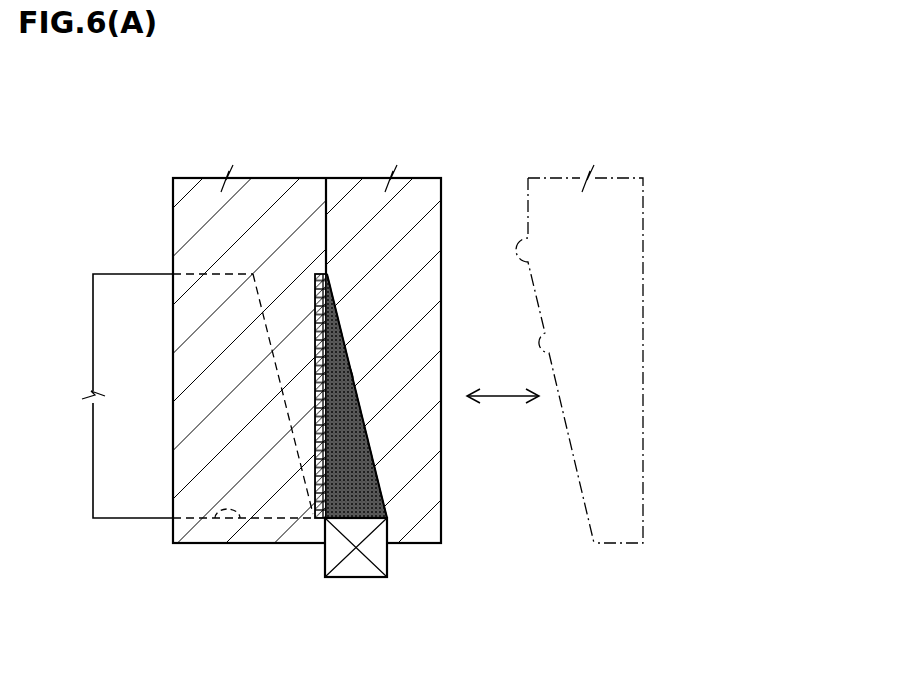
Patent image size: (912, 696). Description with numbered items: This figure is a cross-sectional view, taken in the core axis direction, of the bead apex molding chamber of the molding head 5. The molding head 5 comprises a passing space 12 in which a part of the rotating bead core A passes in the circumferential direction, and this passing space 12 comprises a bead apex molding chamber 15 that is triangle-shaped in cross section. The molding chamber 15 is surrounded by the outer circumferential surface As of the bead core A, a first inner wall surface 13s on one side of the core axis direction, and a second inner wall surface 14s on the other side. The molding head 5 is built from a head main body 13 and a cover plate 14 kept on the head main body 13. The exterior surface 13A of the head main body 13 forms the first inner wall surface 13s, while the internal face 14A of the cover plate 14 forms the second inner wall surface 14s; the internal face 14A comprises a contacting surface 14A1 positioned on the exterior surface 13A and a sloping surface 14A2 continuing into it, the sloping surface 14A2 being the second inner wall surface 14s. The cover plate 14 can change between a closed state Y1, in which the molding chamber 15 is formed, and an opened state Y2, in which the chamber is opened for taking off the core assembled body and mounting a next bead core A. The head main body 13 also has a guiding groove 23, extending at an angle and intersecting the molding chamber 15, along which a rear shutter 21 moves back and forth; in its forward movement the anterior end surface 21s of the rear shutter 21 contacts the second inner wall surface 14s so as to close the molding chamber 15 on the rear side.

The molding head 5 is at (152, 229).
The head main body 13 is at (198, 212).
The first inner wall surface 13s is at (302, 311).
The exterior surface 13A is at (326, 313).
The cover plate 14 is at (422, 213).
The second inner wall surface 14s is at (353, 377).
The internal face 14A is at (800, 237).
The contacting surface 14A1 is at (520, 245).
The sloping surface 14A2 is at (543, 350).
The passing space 12 is at (438, 396).
The bead apex molding chamber 15 is at (350, 464).
The rear shutter 21 is at (130, 520).
The anterior end surface 21s is at (296, 445).
The guiding groove 23 is at (220, 514).
The bead core A is at (351, 565).
The outer circumferential surface As is at (355, 516).
The closed state Y1 is at (443, 548).
The opened state Y2 is at (632, 165).